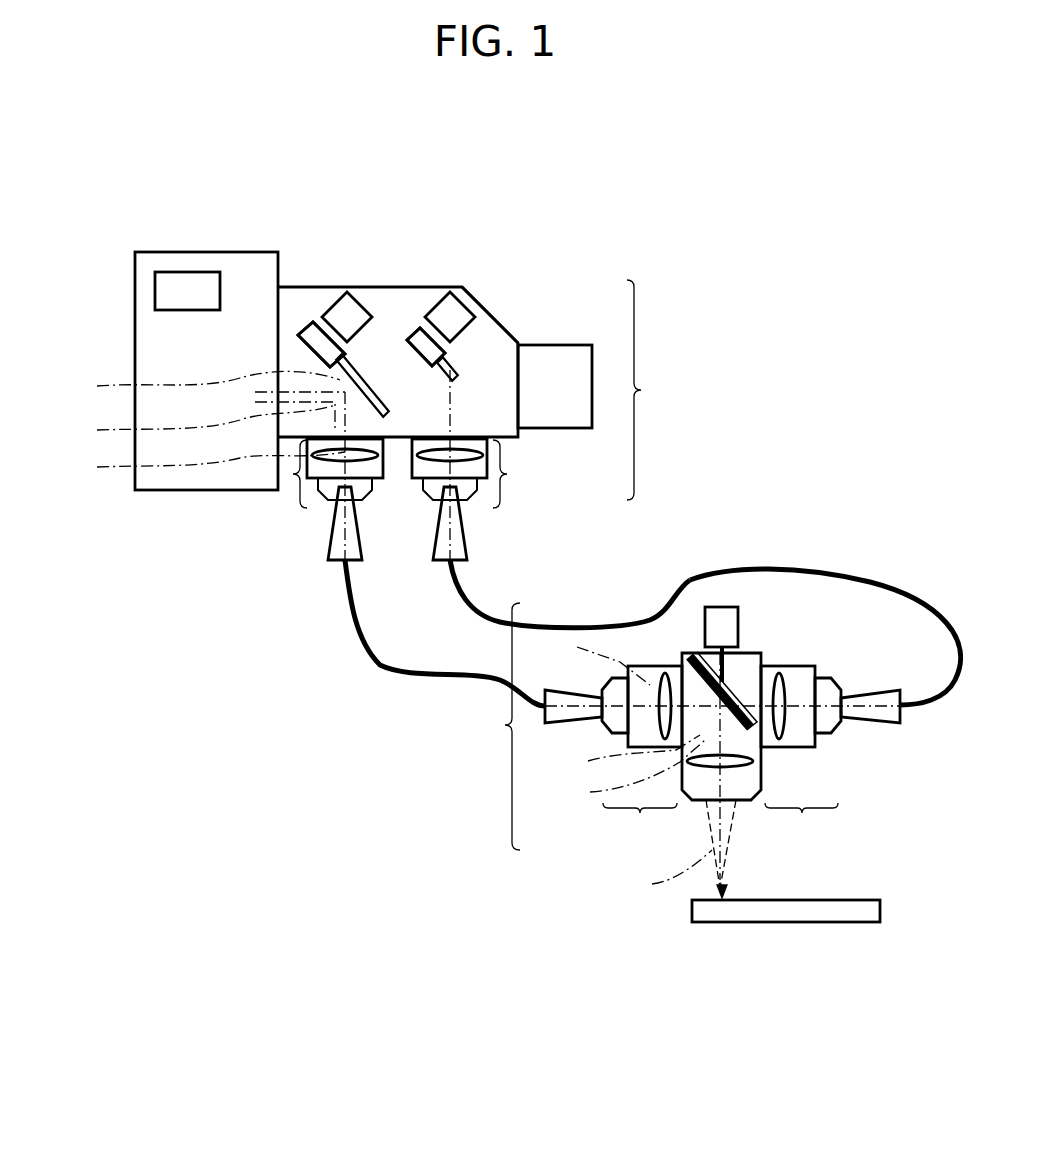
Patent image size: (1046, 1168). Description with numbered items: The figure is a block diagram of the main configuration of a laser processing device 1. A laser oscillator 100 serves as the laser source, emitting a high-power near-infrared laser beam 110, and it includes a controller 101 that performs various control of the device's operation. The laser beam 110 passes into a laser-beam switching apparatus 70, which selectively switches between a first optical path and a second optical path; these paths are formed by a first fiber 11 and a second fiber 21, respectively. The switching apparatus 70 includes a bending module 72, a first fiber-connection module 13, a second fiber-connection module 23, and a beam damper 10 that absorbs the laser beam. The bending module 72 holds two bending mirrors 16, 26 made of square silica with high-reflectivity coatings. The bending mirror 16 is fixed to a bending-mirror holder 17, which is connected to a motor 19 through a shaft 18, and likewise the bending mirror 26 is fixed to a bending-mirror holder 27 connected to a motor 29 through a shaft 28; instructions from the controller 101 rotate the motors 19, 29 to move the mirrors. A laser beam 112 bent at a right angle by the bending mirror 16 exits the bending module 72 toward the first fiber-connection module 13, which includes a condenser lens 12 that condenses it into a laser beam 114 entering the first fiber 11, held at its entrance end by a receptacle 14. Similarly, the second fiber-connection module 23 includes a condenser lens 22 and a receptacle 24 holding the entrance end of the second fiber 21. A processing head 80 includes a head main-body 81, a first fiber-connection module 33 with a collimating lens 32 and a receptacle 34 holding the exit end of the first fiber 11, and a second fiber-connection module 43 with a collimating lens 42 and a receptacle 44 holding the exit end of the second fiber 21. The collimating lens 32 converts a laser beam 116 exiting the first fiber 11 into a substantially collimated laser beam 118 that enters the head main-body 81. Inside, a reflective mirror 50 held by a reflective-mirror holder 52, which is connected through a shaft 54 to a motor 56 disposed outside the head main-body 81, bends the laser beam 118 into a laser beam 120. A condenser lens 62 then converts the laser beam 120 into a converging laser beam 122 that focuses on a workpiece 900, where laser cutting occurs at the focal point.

The laser processing device 1 is at (735, 303).
The beam damper 10 is at (568, 352).
The first fiber 11 is at (370, 626).
The condenser lens 12 is at (375, 480).
The first fiber-connection module 13 is at (297, 505).
The receptacle 14 is at (323, 505).
The bending mirror 16 is at (375, 395).
The bending-mirror holder 17 is at (300, 336).
The shaft 18 is at (318, 330).
The motor 19 is at (348, 305).
The second fiber 21 is at (470, 595).
The condenser lens 22 is at (478, 500).
The second fiber-connection module 23 is at (521, 474).
The receptacle 24 is at (428, 505).
The bending mirror 26 is at (455, 378).
The bending-mirror holder 27 is at (413, 338).
The shaft 28 is at (424, 342).
The motor 29 is at (456, 312).
The collimating lens 32 is at (655, 690).
The first fiber-connection module 33 is at (640, 823).
The receptacle 34 is at (607, 689).
The collimating lens 42 is at (790, 680).
The second fiber-connection module 43 is at (801, 823).
The receptacle 44 is at (838, 688).
The reflective mirror 50 is at (761, 740).
The reflective-mirror holder 52 is at (750, 727).
The shaft 54 is at (693, 655).
The motor 56 is at (722, 615).
The condenser lens 62 is at (752, 800).
The laser-beam switching apparatus 70 is at (481, 390).
The bending module 72 is at (514, 340).
The processing head 80 is at (490, 726).
The head main-body 81 is at (750, 653).
The laser oscillator 100 is at (135, 350).
The controller 101 is at (155, 290).
The laser beam 110 is at (192, 387).
The laser beam 112 is at (187, 424).
The laser beam 114 is at (192, 468).
The laser beam 116 is at (586, 656).
The laser beam 118 is at (614, 755).
The laser beam 120 is at (616, 775).
The laser beam 122 is at (653, 874).
The workpiece 900 is at (800, 913).